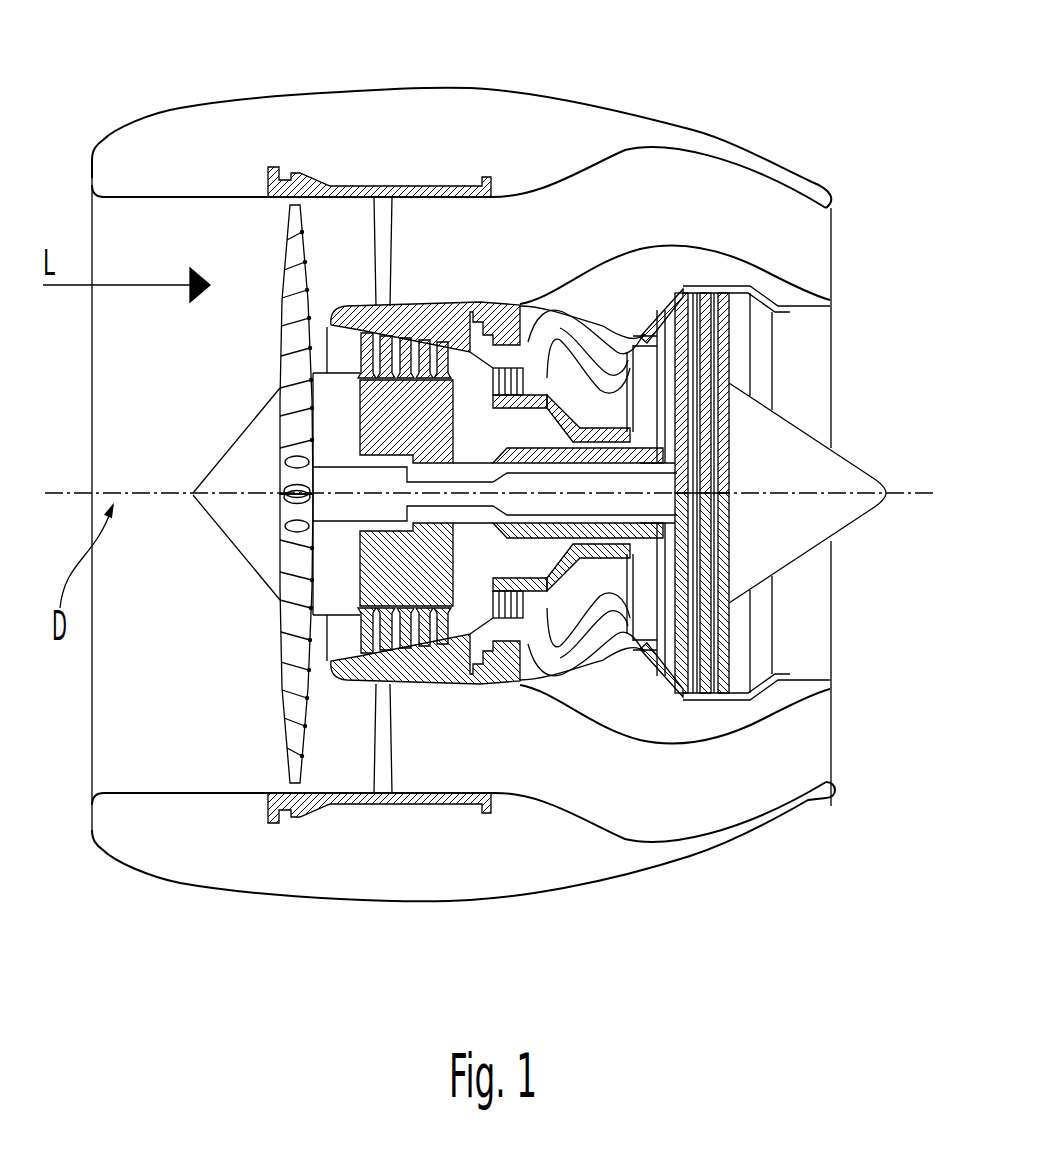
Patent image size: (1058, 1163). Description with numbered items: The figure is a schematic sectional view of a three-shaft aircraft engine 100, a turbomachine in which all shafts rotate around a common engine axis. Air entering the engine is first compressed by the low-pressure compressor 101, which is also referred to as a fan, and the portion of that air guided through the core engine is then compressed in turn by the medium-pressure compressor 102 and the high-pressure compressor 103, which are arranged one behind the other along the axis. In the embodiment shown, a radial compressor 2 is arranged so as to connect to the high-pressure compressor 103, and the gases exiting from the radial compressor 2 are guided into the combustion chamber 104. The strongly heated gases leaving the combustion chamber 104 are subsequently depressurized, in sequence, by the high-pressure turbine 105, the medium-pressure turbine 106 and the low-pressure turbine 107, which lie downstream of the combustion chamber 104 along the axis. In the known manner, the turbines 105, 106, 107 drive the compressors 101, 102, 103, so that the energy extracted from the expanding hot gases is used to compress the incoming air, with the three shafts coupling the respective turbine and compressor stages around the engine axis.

The three-shaft aircraft engine 100 is at (727, 876).
The low-pressure compressor 101 is at (280, 288).
The medium-pressure compressor 102 is at (383, 401).
The high-pressure compressor 103 is at (509, 369).
The radial compressor 2 is at (538, 376).
The combustion chamber 104 is at (588, 367).
The high-pressure turbine 105 is at (632, 335).
The medium-pressure turbine 106 is at (664, 315).
The low-pressure turbine 107 is at (714, 335).